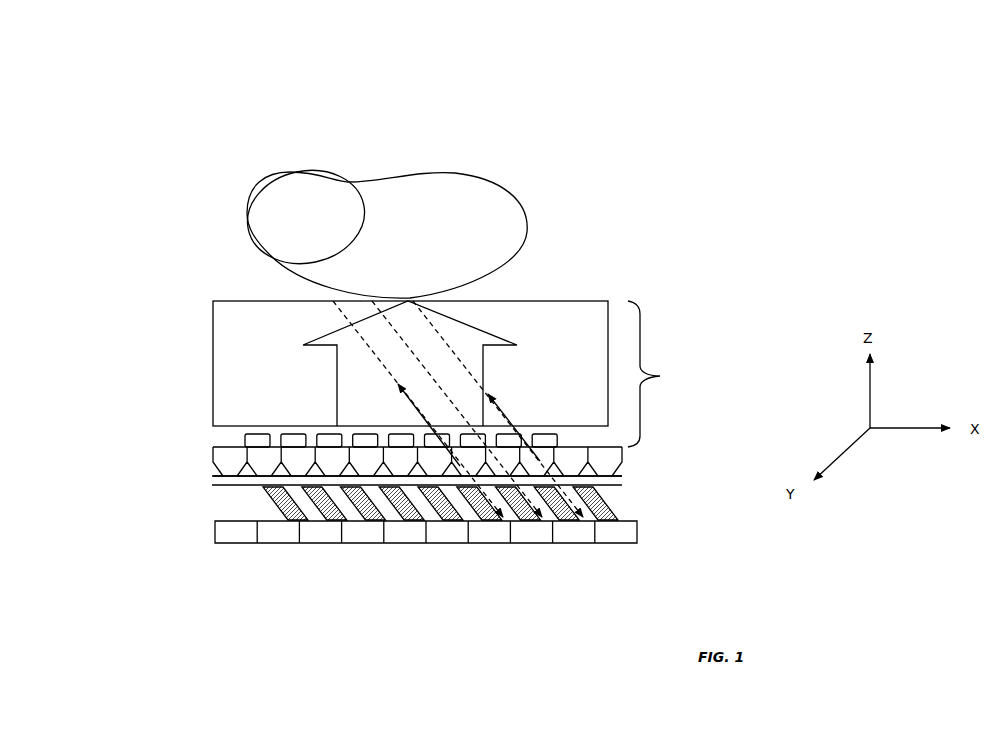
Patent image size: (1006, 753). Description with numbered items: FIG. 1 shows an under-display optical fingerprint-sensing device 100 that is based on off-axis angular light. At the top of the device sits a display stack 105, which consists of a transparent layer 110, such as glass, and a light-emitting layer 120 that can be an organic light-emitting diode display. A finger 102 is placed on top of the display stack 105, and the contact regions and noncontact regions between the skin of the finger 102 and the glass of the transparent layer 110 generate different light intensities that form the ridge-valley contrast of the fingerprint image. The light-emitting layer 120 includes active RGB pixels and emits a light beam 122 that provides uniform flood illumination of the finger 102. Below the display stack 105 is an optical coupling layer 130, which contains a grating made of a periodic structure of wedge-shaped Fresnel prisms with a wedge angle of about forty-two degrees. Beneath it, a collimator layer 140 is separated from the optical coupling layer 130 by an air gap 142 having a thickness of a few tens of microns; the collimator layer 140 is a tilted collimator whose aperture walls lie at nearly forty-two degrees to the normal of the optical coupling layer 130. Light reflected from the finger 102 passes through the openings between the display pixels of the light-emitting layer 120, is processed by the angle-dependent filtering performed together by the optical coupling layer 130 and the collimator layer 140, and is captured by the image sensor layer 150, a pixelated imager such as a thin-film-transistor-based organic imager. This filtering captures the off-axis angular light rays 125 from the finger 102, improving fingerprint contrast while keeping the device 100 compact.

The under-display optical fingerprint-sensing device 100 is at (201, 132).
The finger 102 is at (418, 245).
The display stack 105 is at (663, 374).
The transparent layer 110 is at (213, 355).
The light-emitting layer 120 is at (241, 438).
The light beam 122 is at (337, 378).
The off-axis angular light rays 125 is at (402, 380).
The optical coupling layer 130 is at (627, 461).
The collimator layer 140 is at (261, 497).
The air gap 142 is at (208, 480).
The image sensor layer 150 is at (641, 537).